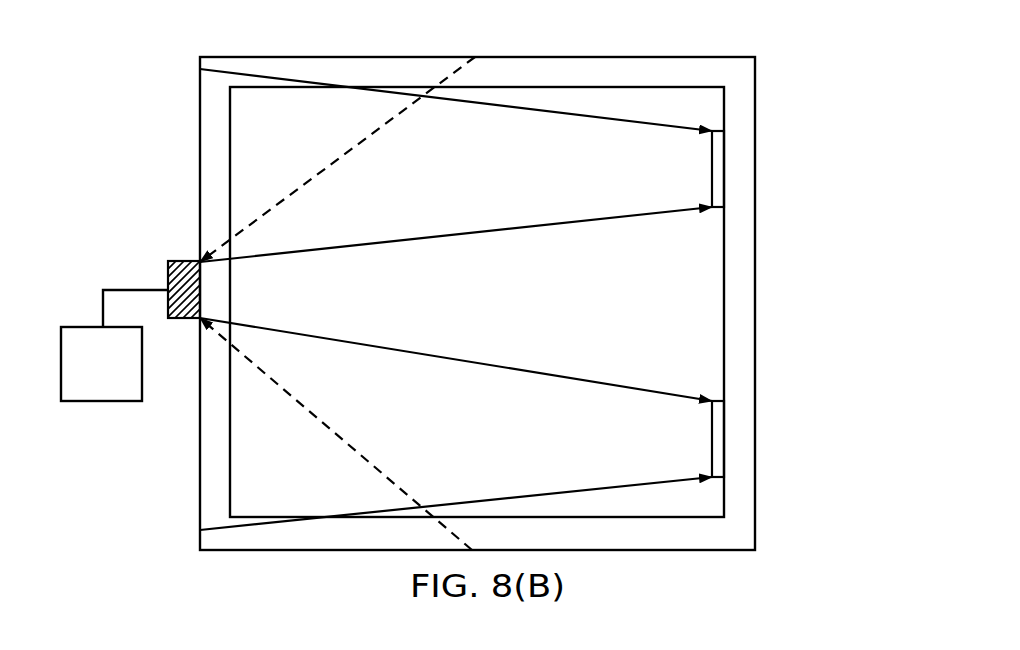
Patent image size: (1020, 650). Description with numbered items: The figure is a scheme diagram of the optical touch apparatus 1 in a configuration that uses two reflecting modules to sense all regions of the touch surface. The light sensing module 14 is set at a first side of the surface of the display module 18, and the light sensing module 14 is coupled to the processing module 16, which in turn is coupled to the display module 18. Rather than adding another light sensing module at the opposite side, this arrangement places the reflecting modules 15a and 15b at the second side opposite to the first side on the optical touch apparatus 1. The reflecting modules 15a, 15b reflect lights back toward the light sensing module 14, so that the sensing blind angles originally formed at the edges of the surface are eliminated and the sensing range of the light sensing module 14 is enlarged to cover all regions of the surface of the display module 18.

The optical touch apparatus 1 is at (604, 40).
The light sensing module 14 is at (168, 262).
The reflecting module 15a is at (718, 168).
The reflecting module 15b is at (718, 437).
The processing module 16 is at (92, 401).
The display module 18 is at (222, 67).